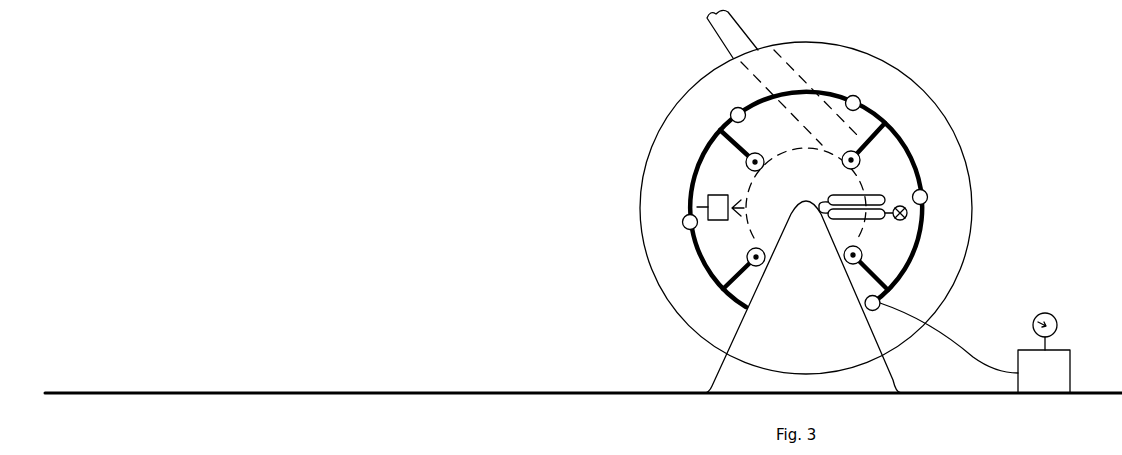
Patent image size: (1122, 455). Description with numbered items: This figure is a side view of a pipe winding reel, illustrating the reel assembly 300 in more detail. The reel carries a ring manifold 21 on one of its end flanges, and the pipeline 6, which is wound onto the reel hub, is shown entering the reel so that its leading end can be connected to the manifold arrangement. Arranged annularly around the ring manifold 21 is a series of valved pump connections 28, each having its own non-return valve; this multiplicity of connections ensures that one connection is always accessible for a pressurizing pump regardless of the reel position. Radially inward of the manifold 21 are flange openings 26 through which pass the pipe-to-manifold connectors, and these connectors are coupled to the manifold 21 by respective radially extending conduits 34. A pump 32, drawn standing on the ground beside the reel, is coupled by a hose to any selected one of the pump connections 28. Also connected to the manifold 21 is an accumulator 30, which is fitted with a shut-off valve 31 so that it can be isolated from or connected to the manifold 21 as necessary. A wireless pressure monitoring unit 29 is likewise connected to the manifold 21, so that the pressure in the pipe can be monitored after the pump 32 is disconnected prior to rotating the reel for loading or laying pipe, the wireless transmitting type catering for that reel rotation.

The pipeline 6 is at (708, 32).
The ring manifold 21 is at (837, 93).
The flange openings 26 is at (745, 257).
The valved pump connections 28 is at (725, 108).
The wireless pressure monitoring unit 29 is at (703, 191).
The accumulator 30 is at (880, 183).
The shut-off valve 31 is at (913, 213).
The pump 32 is at (1060, 355).
The radially extending conduits 34 is at (741, 143).
The reel assembly 300 is at (957, 72).